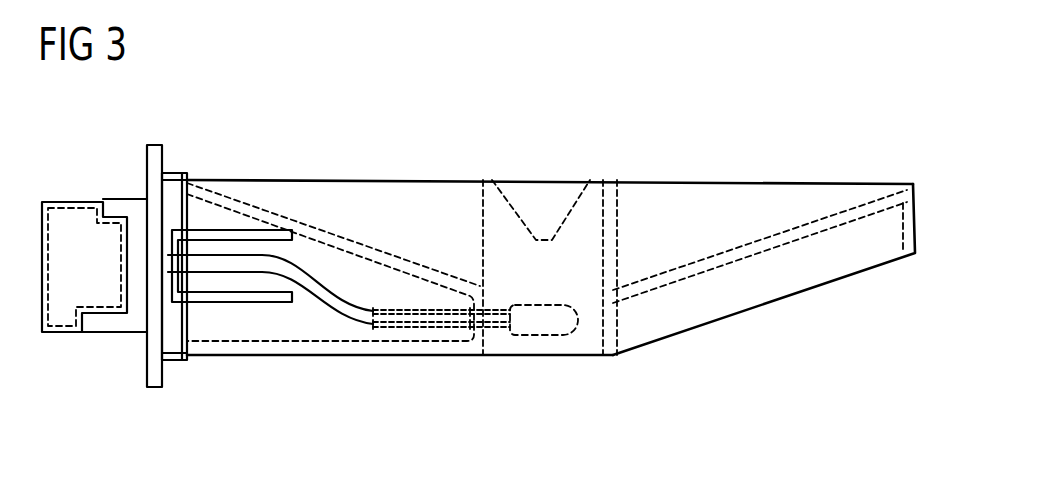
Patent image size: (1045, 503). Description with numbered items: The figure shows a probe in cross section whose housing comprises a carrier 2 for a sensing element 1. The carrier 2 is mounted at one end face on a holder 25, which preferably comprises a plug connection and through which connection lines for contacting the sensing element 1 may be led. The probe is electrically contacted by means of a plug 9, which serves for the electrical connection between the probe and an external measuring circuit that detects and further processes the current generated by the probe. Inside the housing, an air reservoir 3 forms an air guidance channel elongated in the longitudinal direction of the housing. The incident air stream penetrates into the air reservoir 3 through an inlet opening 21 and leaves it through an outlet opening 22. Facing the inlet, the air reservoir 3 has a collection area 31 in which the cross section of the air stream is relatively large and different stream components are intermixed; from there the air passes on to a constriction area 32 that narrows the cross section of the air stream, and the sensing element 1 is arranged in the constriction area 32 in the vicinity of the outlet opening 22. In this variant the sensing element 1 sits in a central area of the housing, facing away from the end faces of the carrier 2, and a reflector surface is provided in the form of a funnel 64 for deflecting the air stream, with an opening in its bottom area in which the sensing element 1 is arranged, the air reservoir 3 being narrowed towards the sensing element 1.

The sensing element 1 is at (548, 310).
The carrier 2 is at (702, 182).
The air reservoir 3 is at (462, 208).
The plug 9 is at (65, 215).
The inlet opening 21 is at (547, 180).
The outlet opening 22 is at (535, 357).
The holder 25 is at (155, 145).
The collection area 31 is at (648, 210).
The constriction area 32 is at (557, 297).
The funnel 64 is at (388, 258).